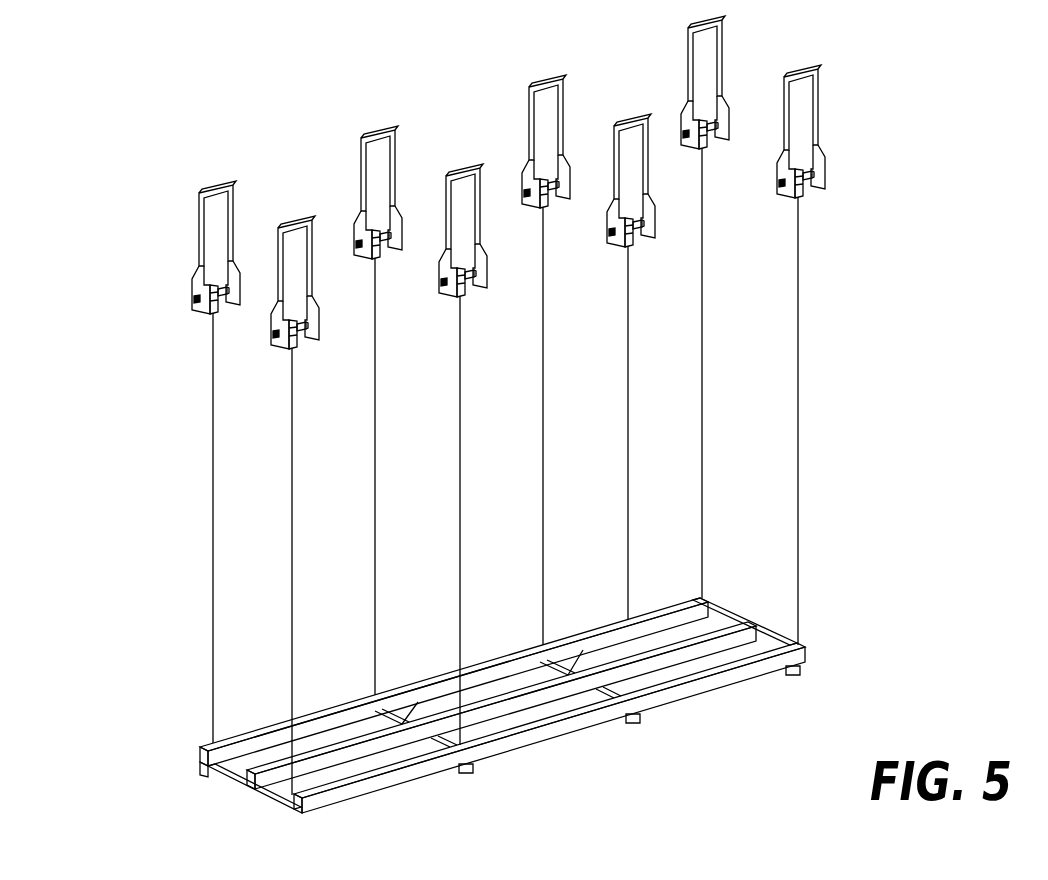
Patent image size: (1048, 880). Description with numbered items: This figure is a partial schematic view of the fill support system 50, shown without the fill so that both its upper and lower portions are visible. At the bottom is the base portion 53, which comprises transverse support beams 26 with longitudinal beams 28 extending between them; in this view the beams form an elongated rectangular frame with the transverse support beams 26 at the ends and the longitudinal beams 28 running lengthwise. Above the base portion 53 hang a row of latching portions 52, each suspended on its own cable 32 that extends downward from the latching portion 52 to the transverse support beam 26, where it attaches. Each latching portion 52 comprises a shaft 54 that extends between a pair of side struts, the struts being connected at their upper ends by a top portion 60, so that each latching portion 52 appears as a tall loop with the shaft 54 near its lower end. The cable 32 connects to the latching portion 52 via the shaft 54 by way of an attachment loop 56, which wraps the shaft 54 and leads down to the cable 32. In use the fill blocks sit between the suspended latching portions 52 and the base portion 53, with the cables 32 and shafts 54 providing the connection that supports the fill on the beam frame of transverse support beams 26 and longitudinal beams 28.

The transverse support beam 26 is at (712, 604).
The longitudinal beam 28 is at (440, 670).
The cable 32 is at (212, 492).
The fill support system 50 is at (900, 179).
The latching portion 52 is at (501, 193).
The base portion 53 is at (843, 640).
The shaft 54 is at (444, 281).
The attachment loop 56 is at (496, 295).
The top portion 60 is at (215, 199).